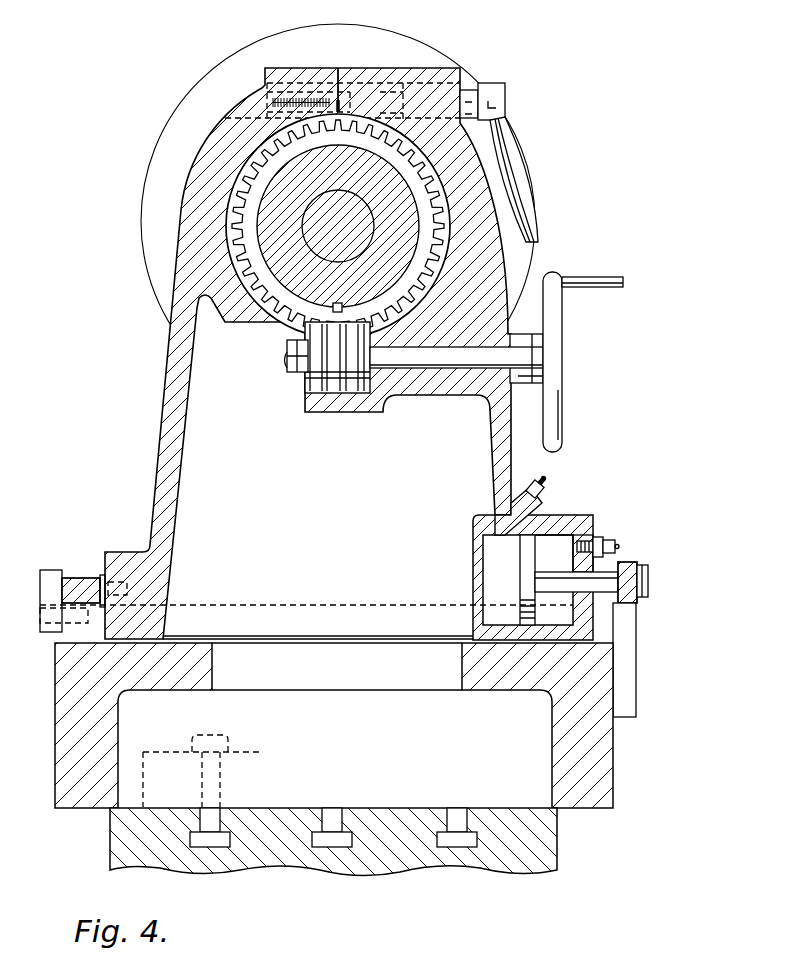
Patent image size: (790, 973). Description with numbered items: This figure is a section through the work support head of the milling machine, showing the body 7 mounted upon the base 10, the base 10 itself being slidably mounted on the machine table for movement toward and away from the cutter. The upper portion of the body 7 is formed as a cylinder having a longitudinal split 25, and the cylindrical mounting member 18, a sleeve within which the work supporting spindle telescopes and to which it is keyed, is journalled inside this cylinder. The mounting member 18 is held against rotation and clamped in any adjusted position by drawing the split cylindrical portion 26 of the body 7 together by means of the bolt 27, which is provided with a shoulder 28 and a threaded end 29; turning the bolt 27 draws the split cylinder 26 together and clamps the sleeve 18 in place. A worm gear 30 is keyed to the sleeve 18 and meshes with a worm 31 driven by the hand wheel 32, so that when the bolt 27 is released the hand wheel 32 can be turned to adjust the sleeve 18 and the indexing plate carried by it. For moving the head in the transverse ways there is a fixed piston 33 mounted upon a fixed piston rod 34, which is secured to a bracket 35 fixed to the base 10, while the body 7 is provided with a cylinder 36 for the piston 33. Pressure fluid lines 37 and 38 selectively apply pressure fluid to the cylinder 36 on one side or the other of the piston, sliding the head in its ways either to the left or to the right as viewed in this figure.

The body 7 is at (167, 352).
The base 10 is at (607, 750).
The cylindrical mounting member 18 is at (408, 230).
The longitudinal split 25 is at (339, 68).
The split cylindrical portion 26 is at (213, 161).
The bolt 27 is at (495, 85).
The shoulder 28 is at (465, 90).
The threaded end 29 is at (289, 84).
The worm gear 30 is at (430, 246).
The worm 31 is at (310, 382).
The hand wheel 32 is at (558, 350).
The fixed piston 33 is at (532, 547).
The fixed piston rod 34 is at (605, 573).
The bracket 35 is at (628, 623).
The cylinder 36 is at (562, 538).
The pressure fluid line 37 is at (544, 480).
The pressure fluid line 38 is at (612, 540).